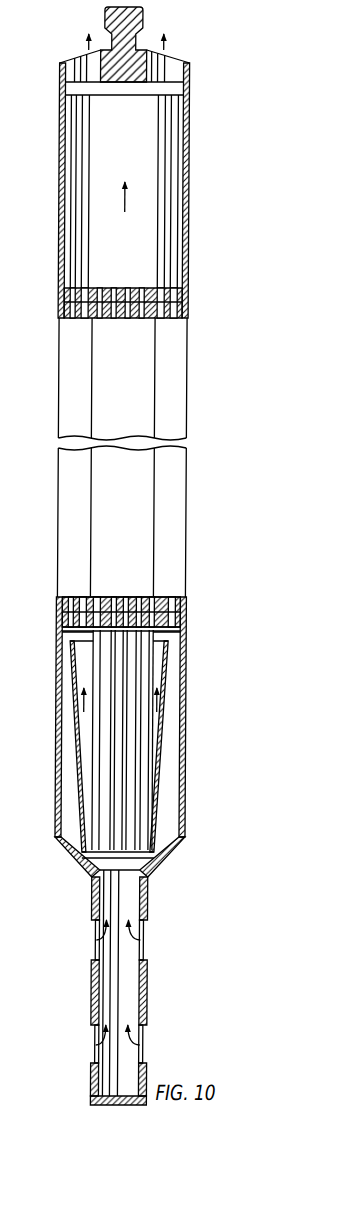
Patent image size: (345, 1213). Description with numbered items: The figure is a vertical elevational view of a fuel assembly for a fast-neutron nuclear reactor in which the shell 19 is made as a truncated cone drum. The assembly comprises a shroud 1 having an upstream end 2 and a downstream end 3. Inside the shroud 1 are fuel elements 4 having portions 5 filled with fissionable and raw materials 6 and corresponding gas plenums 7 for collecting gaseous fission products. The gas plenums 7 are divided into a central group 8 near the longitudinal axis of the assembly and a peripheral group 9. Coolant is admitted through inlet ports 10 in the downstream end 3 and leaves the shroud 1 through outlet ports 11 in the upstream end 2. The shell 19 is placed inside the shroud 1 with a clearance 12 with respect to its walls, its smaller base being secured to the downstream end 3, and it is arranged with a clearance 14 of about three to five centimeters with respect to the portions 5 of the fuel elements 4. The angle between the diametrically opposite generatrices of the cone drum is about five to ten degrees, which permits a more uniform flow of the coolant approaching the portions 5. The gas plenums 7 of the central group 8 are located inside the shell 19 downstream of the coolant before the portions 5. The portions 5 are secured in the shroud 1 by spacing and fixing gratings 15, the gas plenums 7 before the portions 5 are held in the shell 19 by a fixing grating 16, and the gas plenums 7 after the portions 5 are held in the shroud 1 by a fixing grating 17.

The shroud 1 is at (190, 150).
The upstream end 2 is at (140, 27).
The downstream end 3 is at (148, 985).
The fuel elements 4 is at (188, 605).
The portions filled with fissionable and raw materials 5 is at (194, 287).
The fissionable and raw materials 6 is at (161, 597).
The gas plenums 7 is at (173, 193).
The central group 8 is at (158, 818).
The peripheral group 9 is at (189, 249).
The inlet ports 10 is at (103, 944).
The outlet ports 11 is at (173, 61).
The clearance 12 is at (174, 793).
The clearance 14 is at (172, 637).
The spacing and fixing gratings 15 is at (131, 288).
The fixing grating 16 is at (157, 869).
The fixing grating 17 is at (160, 97).
The shell 19 is at (163, 760).